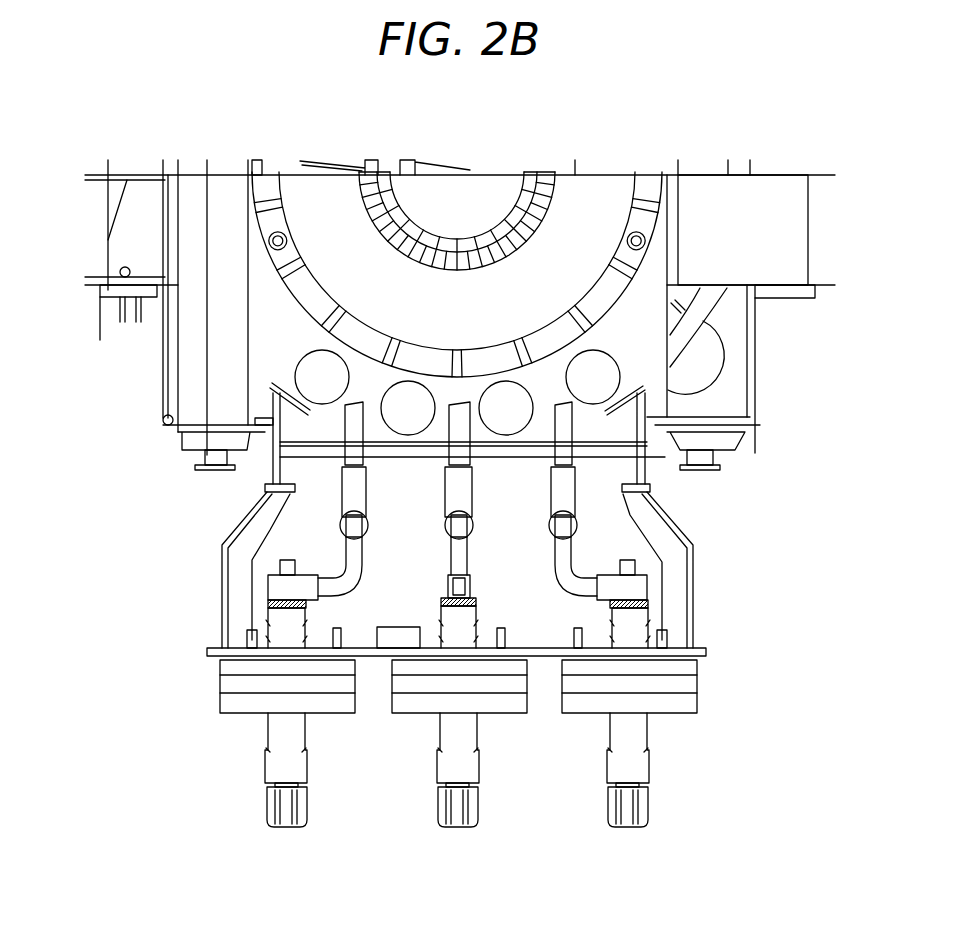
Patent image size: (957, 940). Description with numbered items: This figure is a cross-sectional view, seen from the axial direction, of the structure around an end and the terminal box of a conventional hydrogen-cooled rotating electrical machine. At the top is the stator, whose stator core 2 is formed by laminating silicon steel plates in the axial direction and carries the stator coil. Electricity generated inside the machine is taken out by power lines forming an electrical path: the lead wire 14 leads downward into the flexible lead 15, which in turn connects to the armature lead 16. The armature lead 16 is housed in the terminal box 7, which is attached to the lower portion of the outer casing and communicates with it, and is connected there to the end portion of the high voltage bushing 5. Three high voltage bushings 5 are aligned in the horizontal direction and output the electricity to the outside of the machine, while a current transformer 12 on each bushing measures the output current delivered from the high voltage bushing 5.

The stator core 2 is at (588, 190).
The high voltage bushing 5 is at (307, 813).
The terminal box 7 is at (688, 550).
The current transformer 12 is at (330, 714).
The lead wire 14 is at (465, 462).
The flexible lead 15 is at (467, 503).
The armature lead 16 is at (467, 582).